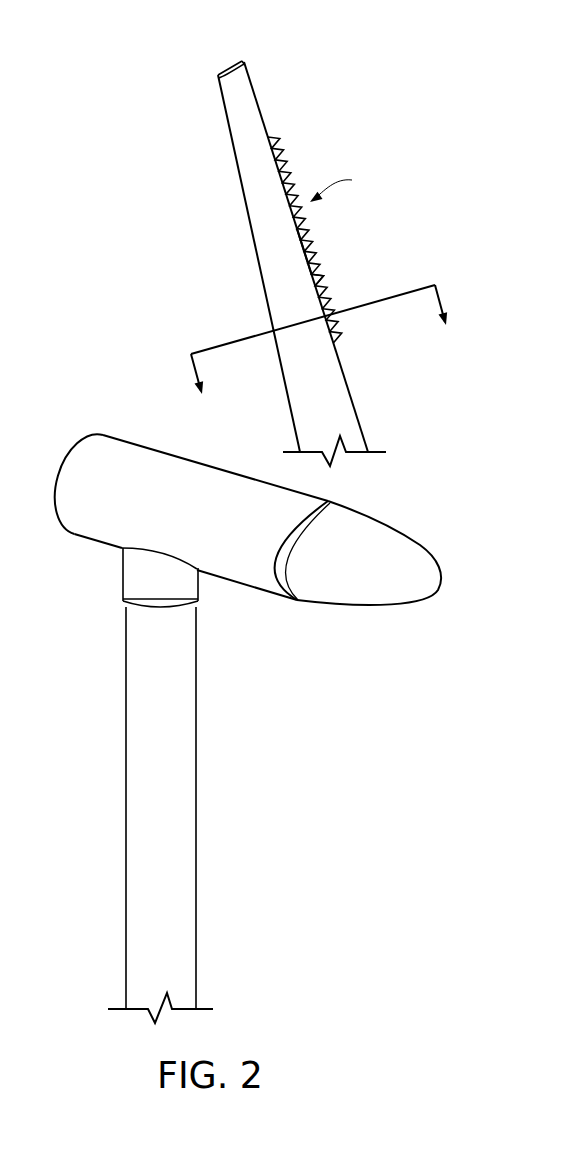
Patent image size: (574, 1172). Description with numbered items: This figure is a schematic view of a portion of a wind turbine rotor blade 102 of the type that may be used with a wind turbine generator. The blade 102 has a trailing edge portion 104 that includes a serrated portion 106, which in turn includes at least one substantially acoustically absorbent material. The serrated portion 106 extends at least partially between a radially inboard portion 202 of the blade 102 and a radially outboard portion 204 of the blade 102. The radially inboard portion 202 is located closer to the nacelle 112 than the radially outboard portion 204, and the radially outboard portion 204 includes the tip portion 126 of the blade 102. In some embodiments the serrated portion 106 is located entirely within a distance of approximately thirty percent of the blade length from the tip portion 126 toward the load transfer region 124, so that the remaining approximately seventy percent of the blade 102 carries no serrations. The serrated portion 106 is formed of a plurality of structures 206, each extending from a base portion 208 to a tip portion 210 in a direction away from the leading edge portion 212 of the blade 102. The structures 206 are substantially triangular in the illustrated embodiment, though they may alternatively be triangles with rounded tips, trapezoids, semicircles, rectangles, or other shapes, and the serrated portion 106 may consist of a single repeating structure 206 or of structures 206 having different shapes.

The rotor blade 102 is at (257, 519).
The trailing edge portion 104 is at (287, 254).
The serrated portion 106 is at (351, 185).
The nacelle 112 is at (253, 477).
The load transfer region 124 is at (370, 449).
The tip portion 126 is at (248, 67).
The radially inboard portion 202 is at (282, 247).
The radially outboard portion 204 is at (257, 99).
The structures 206 is at (306, 232).
The base portion 208 is at (310, 272).
The tip portion 210 is at (316, 262).
The leading edge portion 212 is at (240, 183).